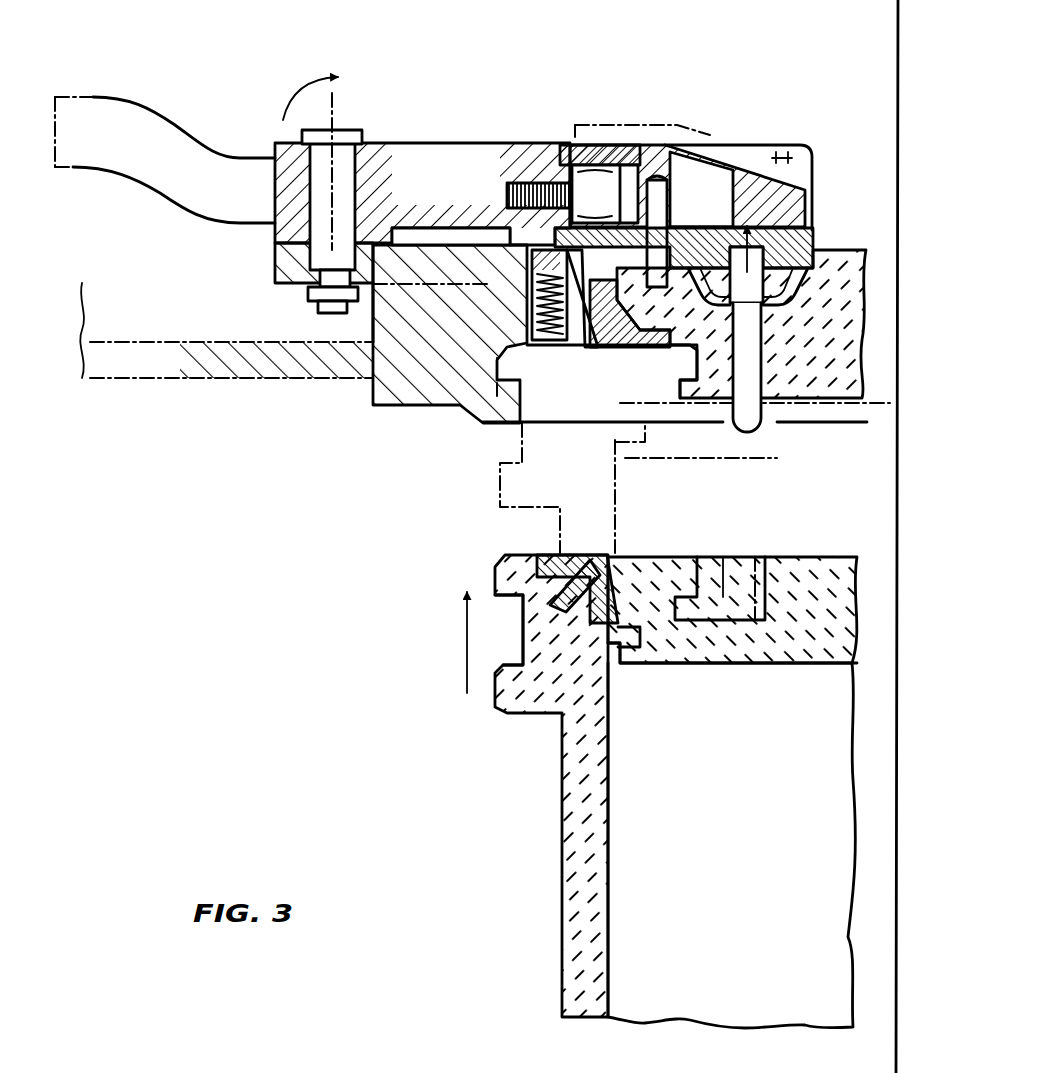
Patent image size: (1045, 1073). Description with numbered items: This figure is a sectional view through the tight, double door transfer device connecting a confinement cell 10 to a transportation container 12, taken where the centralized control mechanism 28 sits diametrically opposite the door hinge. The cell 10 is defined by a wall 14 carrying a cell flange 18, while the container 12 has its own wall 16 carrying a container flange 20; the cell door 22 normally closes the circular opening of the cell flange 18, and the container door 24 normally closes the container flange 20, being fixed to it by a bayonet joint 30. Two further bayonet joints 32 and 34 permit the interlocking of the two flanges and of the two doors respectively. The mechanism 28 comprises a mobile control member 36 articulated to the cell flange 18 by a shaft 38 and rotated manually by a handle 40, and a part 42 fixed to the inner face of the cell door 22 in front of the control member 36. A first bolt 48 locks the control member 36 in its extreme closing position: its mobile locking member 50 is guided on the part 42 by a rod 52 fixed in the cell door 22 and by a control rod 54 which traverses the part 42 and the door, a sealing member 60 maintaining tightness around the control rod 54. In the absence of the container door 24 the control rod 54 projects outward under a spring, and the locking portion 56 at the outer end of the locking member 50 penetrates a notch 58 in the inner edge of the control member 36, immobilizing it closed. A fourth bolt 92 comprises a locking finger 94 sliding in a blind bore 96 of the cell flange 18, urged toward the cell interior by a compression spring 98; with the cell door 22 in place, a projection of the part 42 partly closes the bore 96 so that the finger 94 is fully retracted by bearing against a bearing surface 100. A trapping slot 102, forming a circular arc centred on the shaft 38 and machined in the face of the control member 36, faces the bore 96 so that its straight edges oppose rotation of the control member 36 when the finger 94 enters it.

The confinement cell 10 is at (686, 37).
The transportation container 12 is at (786, 828).
The wall 14 is at (215, 370).
The vertical wall 16 is at (575, 858).
The cell flange 18 is at (403, 383).
The container flange 20 is at (547, 625).
The cell door 22 is at (834, 370).
The container door 24 is at (818, 633).
The centralized control mechanism 28 is at (502, 82).
The bayonet joint 30 is at (627, 672).
The bayonet joint 32 is at (493, 425).
The bayonet joint 34 is at (680, 402).
The mobile control member 36 is at (387, 150).
The shaft 38 is at (320, 167).
The handle 40 is at (117, 112).
The part 42 is at (809, 195).
The first bolt 48 is at (770, 157).
The mobile locking member 50 is at (707, 187).
The rod 52 is at (694, 145).
The control rod 54 is at (752, 370).
The locking portion 56 is at (590, 165).
The notch 58 is at (560, 145).
The sealing member 60 is at (800, 280).
The fourth bolt 92 is at (517, 317).
The locking finger 94 is at (525, 266).
The blind bore 96 is at (590, 350).
The compression spring 98 is at (540, 347).
The bearing surface 100 is at (557, 257).
The trapping slot 102 is at (427, 228).